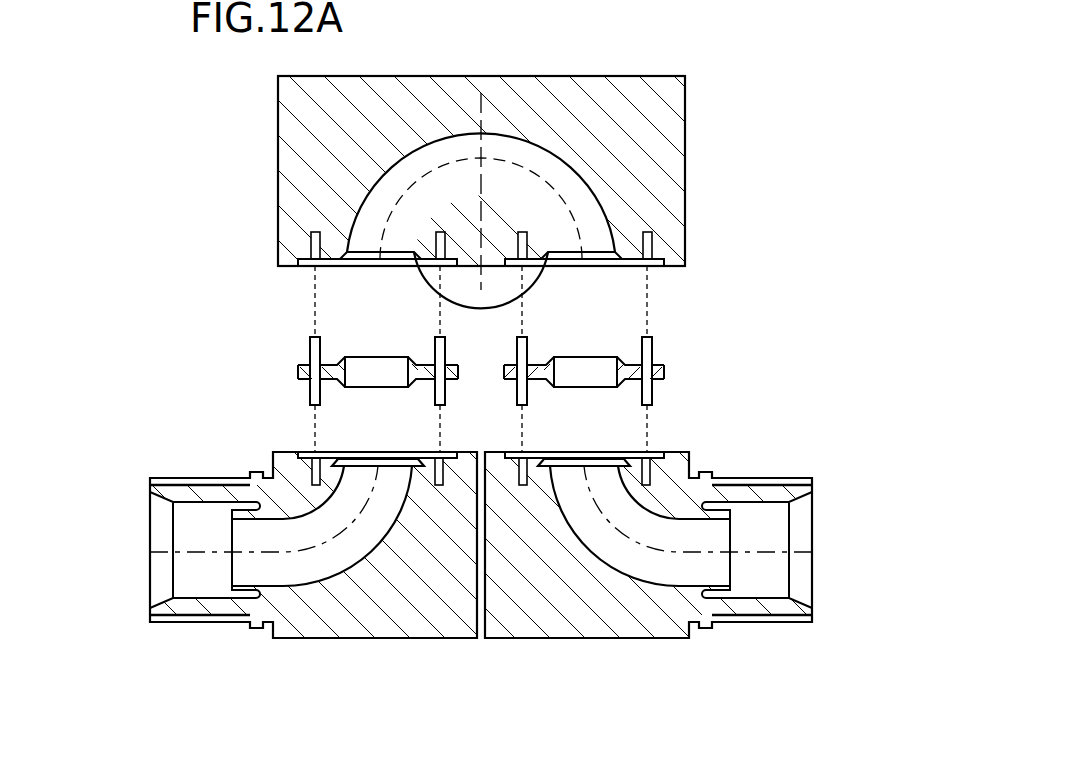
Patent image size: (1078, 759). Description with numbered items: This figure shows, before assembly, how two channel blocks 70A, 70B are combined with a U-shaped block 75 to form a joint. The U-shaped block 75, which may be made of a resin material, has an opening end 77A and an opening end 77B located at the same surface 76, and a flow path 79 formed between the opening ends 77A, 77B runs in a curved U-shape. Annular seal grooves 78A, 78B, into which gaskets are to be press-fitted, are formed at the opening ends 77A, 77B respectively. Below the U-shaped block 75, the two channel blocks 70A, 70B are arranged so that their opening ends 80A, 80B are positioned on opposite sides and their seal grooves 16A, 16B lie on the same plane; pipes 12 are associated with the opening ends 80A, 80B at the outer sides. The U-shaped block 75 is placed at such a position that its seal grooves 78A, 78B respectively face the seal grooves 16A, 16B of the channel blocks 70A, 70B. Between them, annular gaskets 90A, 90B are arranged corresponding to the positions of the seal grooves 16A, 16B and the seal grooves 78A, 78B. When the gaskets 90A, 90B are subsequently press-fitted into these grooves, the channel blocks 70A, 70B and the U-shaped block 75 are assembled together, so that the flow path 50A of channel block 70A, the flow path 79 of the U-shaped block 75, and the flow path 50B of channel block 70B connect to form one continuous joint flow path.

The pipe 12 is at (205, 623).
The seal groove 16A is at (340, 443).
The seal groove 16B is at (622, 443).
The flow path 50A is at (357, 538).
The flow path 50B is at (605, 538).
The channel block 70A is at (312, 658).
The channel block 70B is at (650, 658).
The U-shaped block 75 is at (705, 176).
The surface 76 is at (475, 268).
The opening end 77A is at (391, 281).
The opening end 77B is at (571, 281).
The annular seal groove 78A is at (305, 281).
The annular seal groove 78B is at (657, 281).
The flow path 79 is at (549, 167).
The opening end 80A is at (139, 534).
The opening end 80B is at (823, 534).
The annular gasket 90A is at (279, 380).
The annular gasket 90B is at (684, 376).